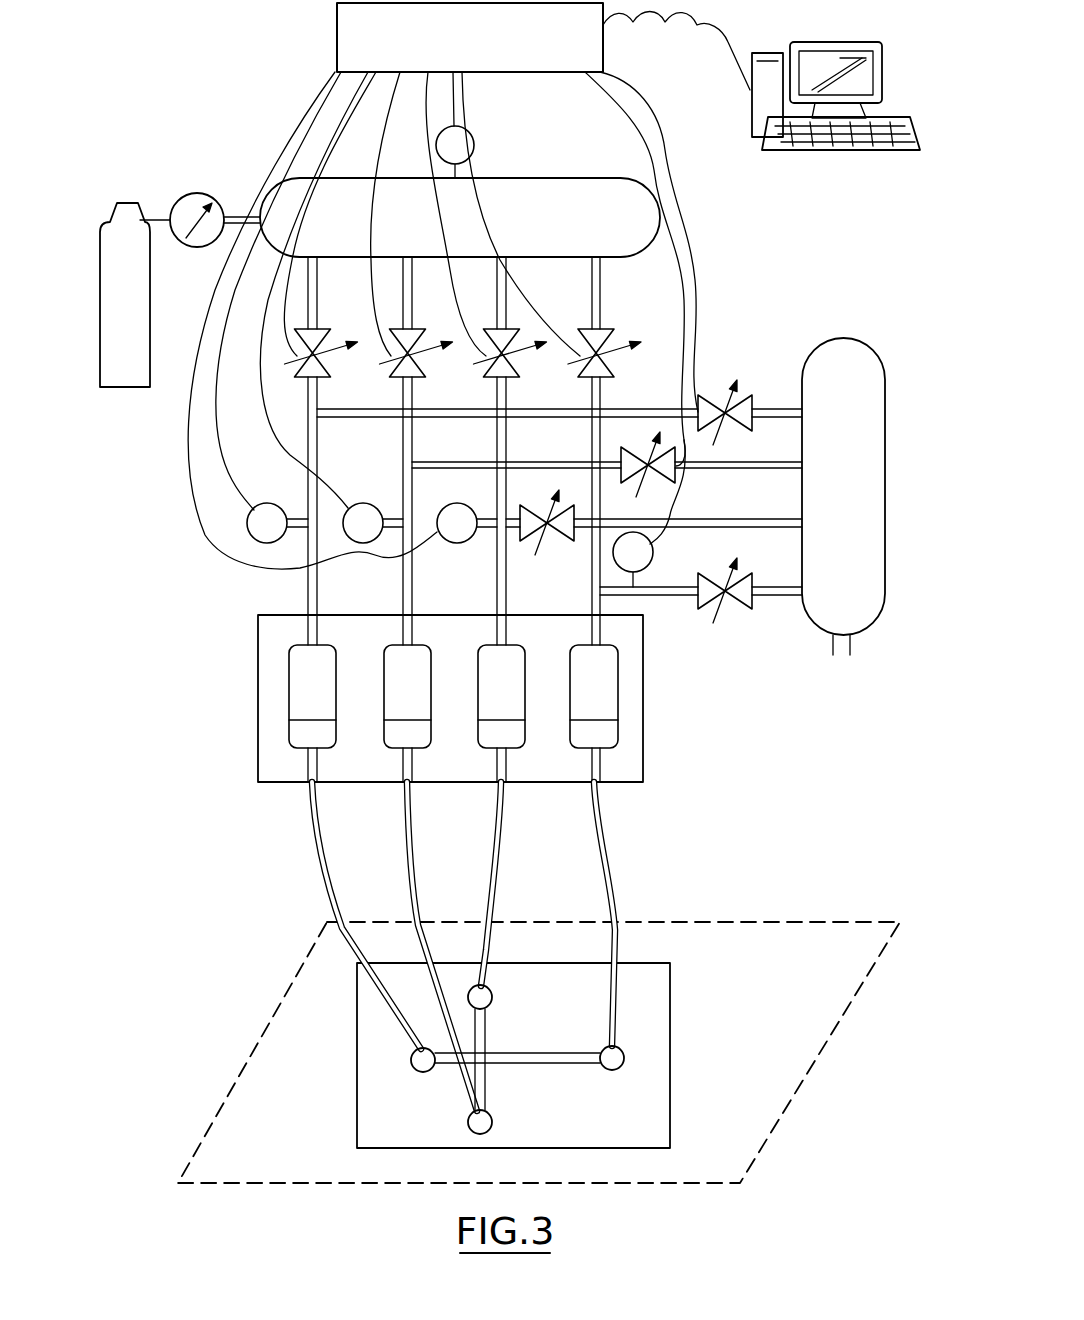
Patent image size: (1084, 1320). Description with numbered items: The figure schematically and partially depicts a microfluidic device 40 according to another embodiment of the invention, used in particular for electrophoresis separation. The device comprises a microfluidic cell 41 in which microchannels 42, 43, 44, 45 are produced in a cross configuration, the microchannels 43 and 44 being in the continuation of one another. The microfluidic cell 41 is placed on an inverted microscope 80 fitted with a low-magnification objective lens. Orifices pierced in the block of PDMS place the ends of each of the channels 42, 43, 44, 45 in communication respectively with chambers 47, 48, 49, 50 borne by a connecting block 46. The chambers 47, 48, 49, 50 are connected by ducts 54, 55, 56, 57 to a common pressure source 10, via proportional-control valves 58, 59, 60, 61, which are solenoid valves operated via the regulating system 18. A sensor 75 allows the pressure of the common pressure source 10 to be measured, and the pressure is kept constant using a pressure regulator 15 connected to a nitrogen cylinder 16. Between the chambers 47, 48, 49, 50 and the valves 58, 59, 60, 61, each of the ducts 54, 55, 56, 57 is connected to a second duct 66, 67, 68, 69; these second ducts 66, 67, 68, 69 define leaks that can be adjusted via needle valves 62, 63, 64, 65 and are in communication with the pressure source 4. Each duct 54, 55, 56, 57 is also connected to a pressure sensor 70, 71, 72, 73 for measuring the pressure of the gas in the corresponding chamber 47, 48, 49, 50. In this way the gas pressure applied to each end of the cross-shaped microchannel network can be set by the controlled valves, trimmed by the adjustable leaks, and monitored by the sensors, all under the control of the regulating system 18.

The pressure source 4 is at (830, 498).
The common pressure source 10 is at (442, 235).
The pressure regulator 15 is at (205, 193).
The nitrogen cylinder 16 is at (112, 313).
The regulating system 18 is at (850, 152).
The microfluidic device 40 is at (728, 822).
The microfluidic cell 41 is at (653, 1030).
The microchannel 42 is at (443, 1068).
The microchannel 43 is at (486, 1082).
The microchannel 44 is at (485, 1033).
The microchannel 45 is at (550, 1052).
The connecting block 46 is at (634, 737).
The chamber 47 is at (303, 735).
The chamber 48 is at (395, 734).
The chamber 49 is at (493, 734).
The chamber 50 is at (606, 667).
The duct 54 is at (308, 583).
The duct 55 is at (403, 573).
The duct 56 is at (495, 567).
The duct 57 is at (593, 570).
The proportional-control valve 58 is at (332, 371).
The proportional-control valve 59 is at (427, 371).
The proportional-control valve 60 is at (521, 371).
The proportional-control valve 61 is at (612, 360).
The needle valve 62 is at (752, 390).
The needle valve 63 is at (668, 477).
The needle valve 64 is at (562, 545).
The needle valve 65 is at (736, 607).
The second duct 66 is at (690, 398).
The second duct 67 is at (722, 469).
The second duct 68 is at (743, 524).
The second duct 69 is at (770, 600).
The pressure sensor 70 is at (277, 503).
The pressure sensor 71 is at (361, 502).
The pressure sensor 72 is at (451, 503).
The pressure sensor 73 is at (654, 552).
The sensor 75 is at (464, 131).
The inverted microscope 80 is at (828, 1050).